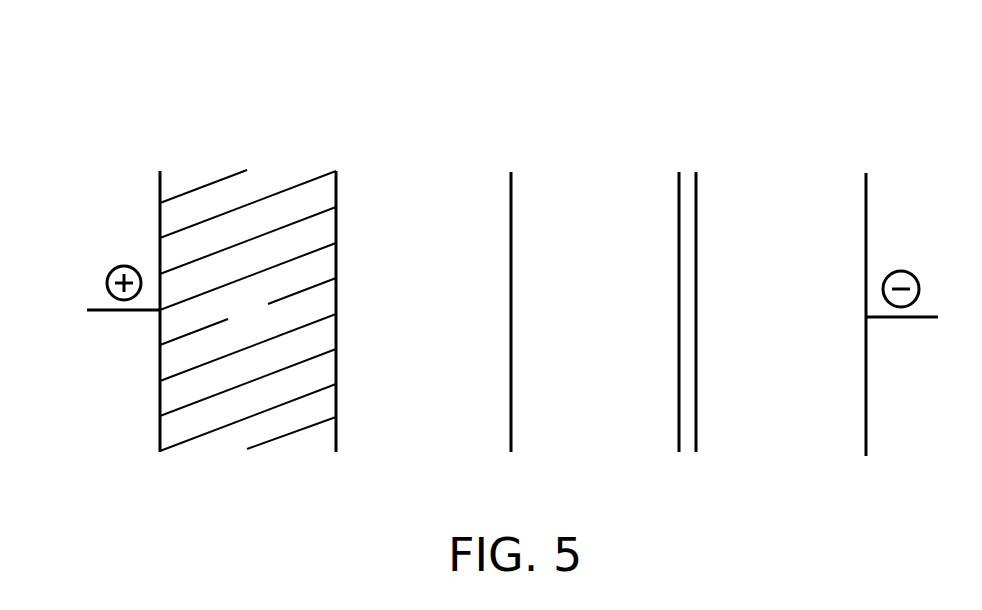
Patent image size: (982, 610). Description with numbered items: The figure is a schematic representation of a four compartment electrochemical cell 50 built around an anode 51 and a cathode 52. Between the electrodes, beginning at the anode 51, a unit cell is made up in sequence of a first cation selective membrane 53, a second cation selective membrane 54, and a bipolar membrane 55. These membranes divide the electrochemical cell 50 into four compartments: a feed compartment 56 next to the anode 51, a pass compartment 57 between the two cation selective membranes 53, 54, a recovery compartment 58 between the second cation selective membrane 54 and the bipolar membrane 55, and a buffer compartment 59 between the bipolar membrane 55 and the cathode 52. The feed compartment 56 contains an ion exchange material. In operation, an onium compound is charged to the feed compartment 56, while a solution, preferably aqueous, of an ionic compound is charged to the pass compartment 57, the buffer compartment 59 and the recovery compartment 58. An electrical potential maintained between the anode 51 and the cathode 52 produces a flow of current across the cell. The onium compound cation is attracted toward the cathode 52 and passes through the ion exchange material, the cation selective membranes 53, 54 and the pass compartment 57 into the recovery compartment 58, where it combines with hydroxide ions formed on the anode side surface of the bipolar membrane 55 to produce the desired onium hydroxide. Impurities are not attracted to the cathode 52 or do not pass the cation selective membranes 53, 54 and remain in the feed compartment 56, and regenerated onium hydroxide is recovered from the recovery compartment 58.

The electrochemical cell 50 is at (142, 118).
The anode 51 is at (130, 297).
The cathode 52 is at (895, 299).
The first cation selective membrane 53 is at (336, 318).
The second cation selective membrane 54 is at (511, 318).
The bipolar membrane 55 is at (687, 319).
The feed compartment 56 is at (248, 310).
The pass compartment 57 is at (422, 312).
The recovery compartment 58 is at (599, 312).
The buffer compartment 59 is at (776, 313).